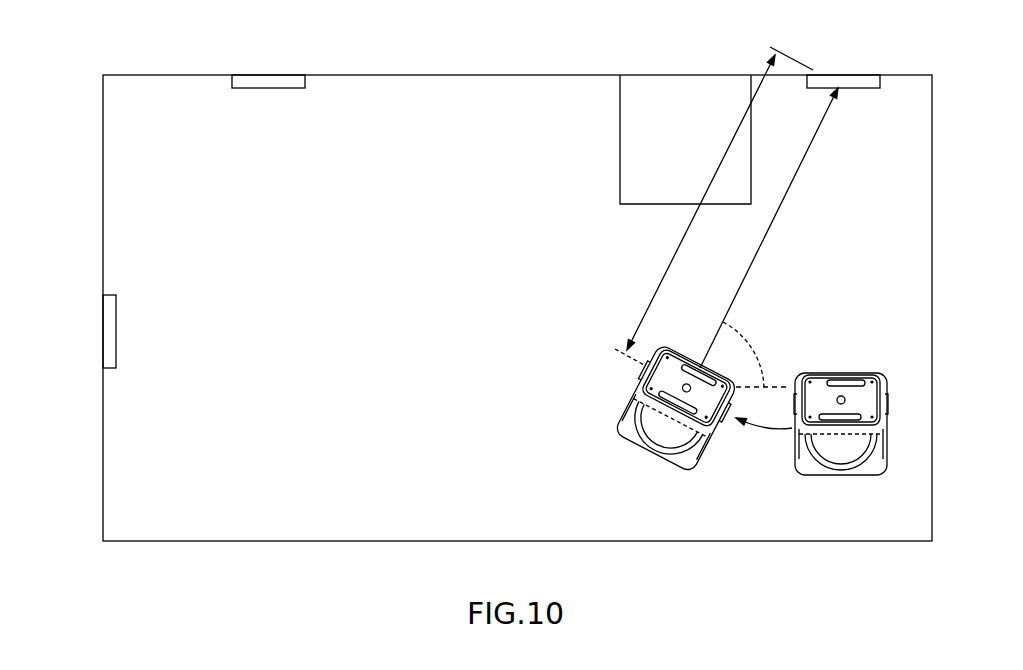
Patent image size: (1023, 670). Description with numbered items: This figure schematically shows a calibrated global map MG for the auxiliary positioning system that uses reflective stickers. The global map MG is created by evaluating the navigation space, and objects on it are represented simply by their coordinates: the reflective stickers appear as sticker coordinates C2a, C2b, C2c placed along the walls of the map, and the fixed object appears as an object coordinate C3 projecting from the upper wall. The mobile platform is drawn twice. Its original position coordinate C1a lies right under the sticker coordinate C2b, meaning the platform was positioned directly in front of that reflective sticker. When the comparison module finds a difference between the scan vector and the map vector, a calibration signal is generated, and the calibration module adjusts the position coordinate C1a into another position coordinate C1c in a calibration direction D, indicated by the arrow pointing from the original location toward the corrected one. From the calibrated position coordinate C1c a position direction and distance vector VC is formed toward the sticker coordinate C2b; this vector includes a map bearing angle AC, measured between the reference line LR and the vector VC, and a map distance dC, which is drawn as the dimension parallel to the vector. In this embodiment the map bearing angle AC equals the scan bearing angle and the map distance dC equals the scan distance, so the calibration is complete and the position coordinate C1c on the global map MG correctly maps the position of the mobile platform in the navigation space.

The global map MG is at (932, 343).
The sticker coordinate C2a is at (277, 83).
The sticker coordinate C2b is at (842, 82).
The sticker coordinate C2c is at (108, 330).
The object coordinate C3 is at (697, 82).
The position coordinate C1a is at (888, 447).
The position coordinate C1c is at (625, 410).
The map distance dC is at (714, 206).
The position direction and distance vector VC is at (792, 182).
The map bearing angle AC is at (751, 354).
The reference line LR is at (782, 388).
The calibration direction D is at (764, 435).